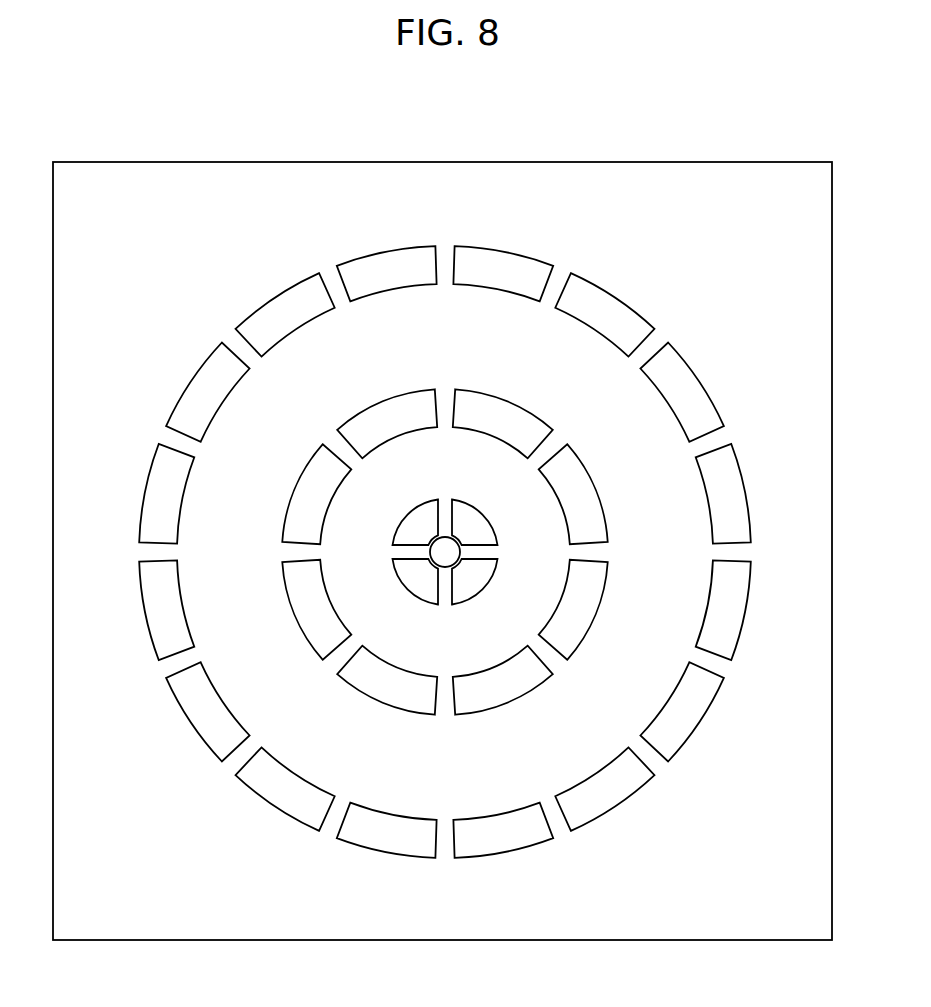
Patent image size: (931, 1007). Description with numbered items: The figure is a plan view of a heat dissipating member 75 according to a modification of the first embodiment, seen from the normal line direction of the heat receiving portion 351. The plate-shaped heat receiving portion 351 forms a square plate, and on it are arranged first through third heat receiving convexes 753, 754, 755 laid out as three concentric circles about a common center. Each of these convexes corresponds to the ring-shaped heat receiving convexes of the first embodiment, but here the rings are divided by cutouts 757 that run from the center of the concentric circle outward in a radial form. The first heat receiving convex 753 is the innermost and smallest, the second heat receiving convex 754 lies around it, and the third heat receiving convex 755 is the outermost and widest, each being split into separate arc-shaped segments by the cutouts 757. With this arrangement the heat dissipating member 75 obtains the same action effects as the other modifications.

The heat dissipating member 75 is at (468, 153).
The heat receiving portion 351 is at (670, 185).
The first heat receiving convex 753 is at (463, 512).
The second heat receiving convex 754 is at (577, 468).
The third heat receiving convex 755 is at (677, 363).
The cutout 757 is at (480, 555).